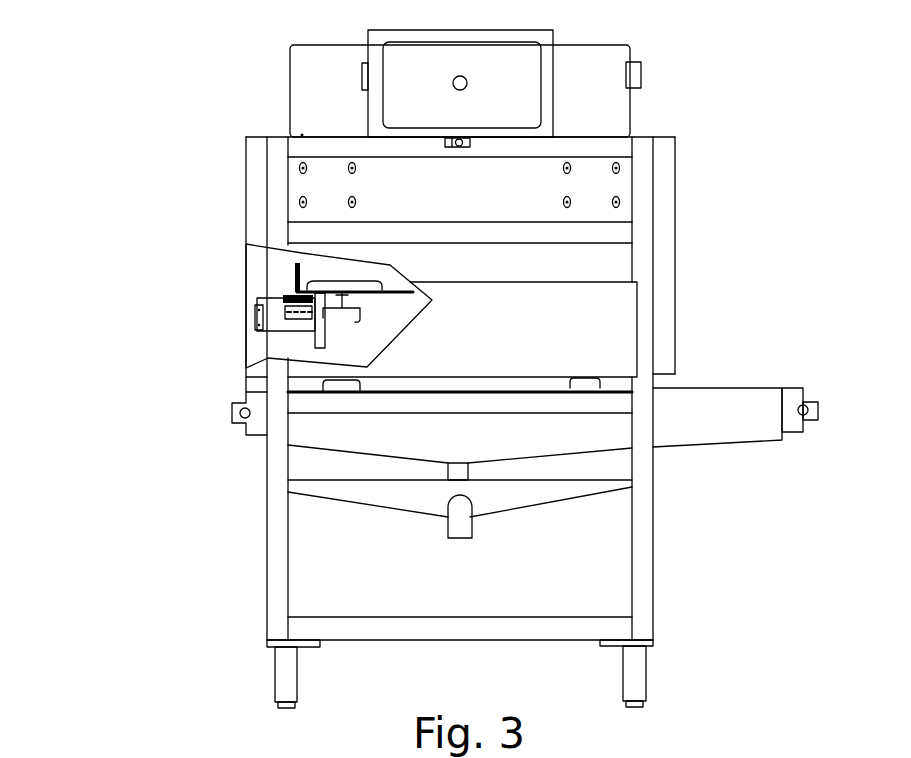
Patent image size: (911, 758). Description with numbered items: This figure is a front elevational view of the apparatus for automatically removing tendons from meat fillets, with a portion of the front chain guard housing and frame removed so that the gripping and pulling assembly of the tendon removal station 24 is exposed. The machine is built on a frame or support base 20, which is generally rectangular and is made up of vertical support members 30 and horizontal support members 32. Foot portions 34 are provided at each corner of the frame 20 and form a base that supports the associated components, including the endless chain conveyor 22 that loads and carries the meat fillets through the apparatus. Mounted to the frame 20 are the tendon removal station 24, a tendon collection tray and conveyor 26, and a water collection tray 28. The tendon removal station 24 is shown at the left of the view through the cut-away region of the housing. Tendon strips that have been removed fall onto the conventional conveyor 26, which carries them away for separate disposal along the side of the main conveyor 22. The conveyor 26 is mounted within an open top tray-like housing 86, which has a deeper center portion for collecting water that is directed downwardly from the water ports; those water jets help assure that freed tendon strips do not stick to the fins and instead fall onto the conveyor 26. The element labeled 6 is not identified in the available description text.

The frame 20 is at (181, 436).
The tendon removal station 24 is at (250, 274).
The endless chain conveyor 22 is at (412, 303).
The processing unit housing 6 is at (613, 308).
The horizontal support members 32 is at (617, 150).
The conveyor 26 is at (780, 388).
The tray-like housing 86 is at (618, 427).
The water collection tray 28 is at (488, 498).
The vertical support members 30 is at (278, 563).
The foot portions 34 is at (283, 663).